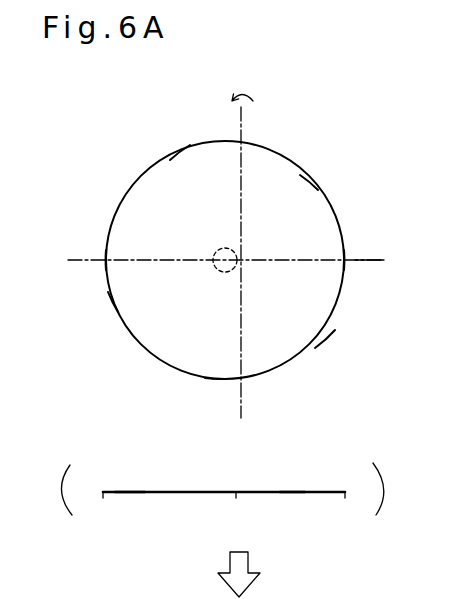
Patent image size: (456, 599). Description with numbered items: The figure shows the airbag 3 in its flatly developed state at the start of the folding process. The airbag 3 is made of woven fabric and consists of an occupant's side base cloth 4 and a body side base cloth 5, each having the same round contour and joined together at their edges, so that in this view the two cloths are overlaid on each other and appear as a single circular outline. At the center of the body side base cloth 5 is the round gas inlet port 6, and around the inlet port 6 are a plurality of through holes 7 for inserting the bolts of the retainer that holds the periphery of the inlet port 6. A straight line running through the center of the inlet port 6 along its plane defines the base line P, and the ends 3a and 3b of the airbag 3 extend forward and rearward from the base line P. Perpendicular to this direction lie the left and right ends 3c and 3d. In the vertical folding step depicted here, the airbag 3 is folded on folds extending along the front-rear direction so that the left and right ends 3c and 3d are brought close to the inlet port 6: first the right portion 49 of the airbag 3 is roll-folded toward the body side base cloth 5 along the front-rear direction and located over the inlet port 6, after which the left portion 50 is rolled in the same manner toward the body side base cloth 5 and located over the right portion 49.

The airbag 3 is at (284, 148).
The end 3a is at (183, 155).
The end 3b is at (215, 373).
The left end 3c is at (105, 252).
The right end 3d is at (343, 253).
The occupant's side base cloth 4 is at (310, 180).
The body side base cloth 5 is at (333, 244).
The gas inlet port 6 is at (223, 272).
The through hole 7 is at (216, 250).
The right portion 49 is at (334, 343).
The left portion 50 is at (109, 312).
The base line P is at (361, 262).